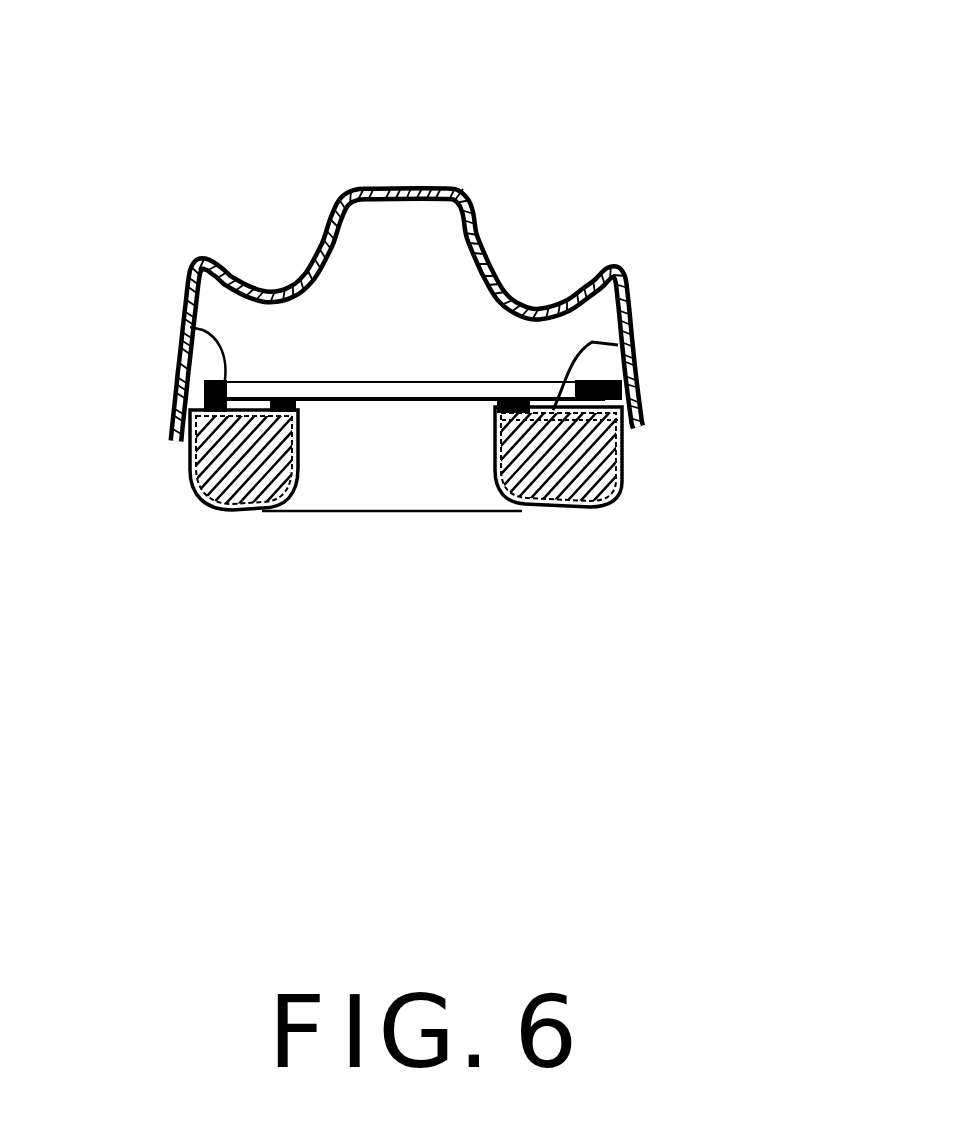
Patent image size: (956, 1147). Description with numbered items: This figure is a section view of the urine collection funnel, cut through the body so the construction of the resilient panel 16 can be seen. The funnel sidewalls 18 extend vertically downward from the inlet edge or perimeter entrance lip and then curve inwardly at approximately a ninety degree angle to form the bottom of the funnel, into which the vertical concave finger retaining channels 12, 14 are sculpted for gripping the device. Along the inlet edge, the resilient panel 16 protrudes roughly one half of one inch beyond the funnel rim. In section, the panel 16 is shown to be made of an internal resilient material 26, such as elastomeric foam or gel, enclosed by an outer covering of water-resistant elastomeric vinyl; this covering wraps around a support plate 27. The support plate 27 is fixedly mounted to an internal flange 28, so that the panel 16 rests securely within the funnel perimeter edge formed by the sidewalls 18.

The vertical concave finger retaining channel 12 is at (278, 257).
The vertical concave finger retaining channel 14 is at (527, 296).
The resilient panel 16 is at (627, 473).
The sidewall 18 is at (643, 417).
The internal resilient material 26 is at (553, 470).
The support plate 27 is at (553, 402).
The internal flange 28 is at (183, 320).